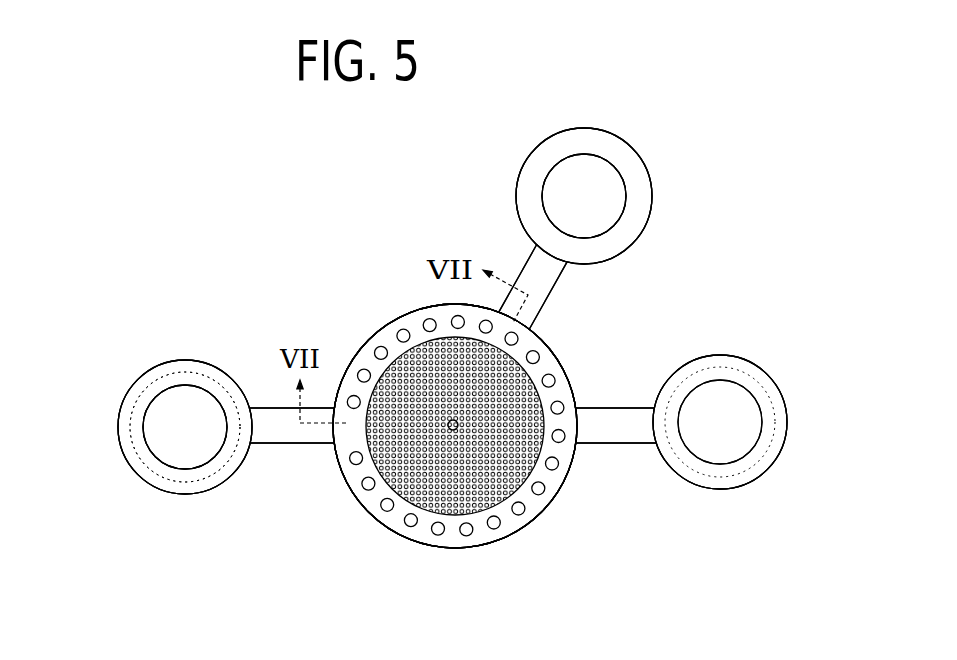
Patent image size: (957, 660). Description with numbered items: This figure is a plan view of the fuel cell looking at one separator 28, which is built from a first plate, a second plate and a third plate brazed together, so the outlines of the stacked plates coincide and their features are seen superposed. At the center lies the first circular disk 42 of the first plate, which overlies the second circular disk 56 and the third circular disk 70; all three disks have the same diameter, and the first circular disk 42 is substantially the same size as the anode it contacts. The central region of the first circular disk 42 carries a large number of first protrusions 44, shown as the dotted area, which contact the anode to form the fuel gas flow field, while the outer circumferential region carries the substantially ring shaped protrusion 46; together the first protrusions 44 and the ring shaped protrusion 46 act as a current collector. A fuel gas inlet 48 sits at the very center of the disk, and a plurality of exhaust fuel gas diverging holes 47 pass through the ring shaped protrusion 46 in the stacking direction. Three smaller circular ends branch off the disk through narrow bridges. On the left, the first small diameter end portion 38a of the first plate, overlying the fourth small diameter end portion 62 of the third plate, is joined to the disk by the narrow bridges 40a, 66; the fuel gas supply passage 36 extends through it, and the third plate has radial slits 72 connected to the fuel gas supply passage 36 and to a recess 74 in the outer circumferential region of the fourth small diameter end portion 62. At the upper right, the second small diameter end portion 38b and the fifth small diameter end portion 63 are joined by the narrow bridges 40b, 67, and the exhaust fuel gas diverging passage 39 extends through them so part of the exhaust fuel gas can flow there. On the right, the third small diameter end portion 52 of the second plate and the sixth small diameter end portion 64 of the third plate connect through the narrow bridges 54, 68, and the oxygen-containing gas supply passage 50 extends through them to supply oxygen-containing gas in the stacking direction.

The separator 28 is at (353, 226).
The fuel gas supply passage 36 is at (157, 438).
The first small diameter end portion 38a is at (224, 362).
The fourth small diameter end portion 62 is at (185, 427).
The second small diameter end portion 38b is at (535, 177).
The fifth small diameter end portion 63 is at (584, 196).
The exhaust fuel gas diverging passage 39 is at (620, 205).
The narrow bridge 40a is at (288, 428).
The narrow bridge 66 is at (291, 425).
The narrow bridge 40b is at (531, 257).
The narrow bridge 67 is at (533, 287).
The first circular disk 42 is at (498, 543).
The third circular disk 70 is at (455, 426).
The second circular disk 56 is at (455, 426).
The first protrusions 44 is at (392, 516).
The substantially ring shaped protrusion 46 is at (533, 500).
The exhaust fuel gas diverging holes 47 is at (456, 463).
The fuel gas inlet 48 is at (449, 420).
The oxygen-containing gas supply passage 50 is at (732, 396).
The sixth small diameter end portion 64 is at (720, 496).
The third small diameter end portion 52 is at (720, 422).
The narrow bridge 68 is at (608, 424).
The narrow bridge 54 is at (616, 425).
The slits 72 is at (190, 358).
The recess 74 is at (121, 400).